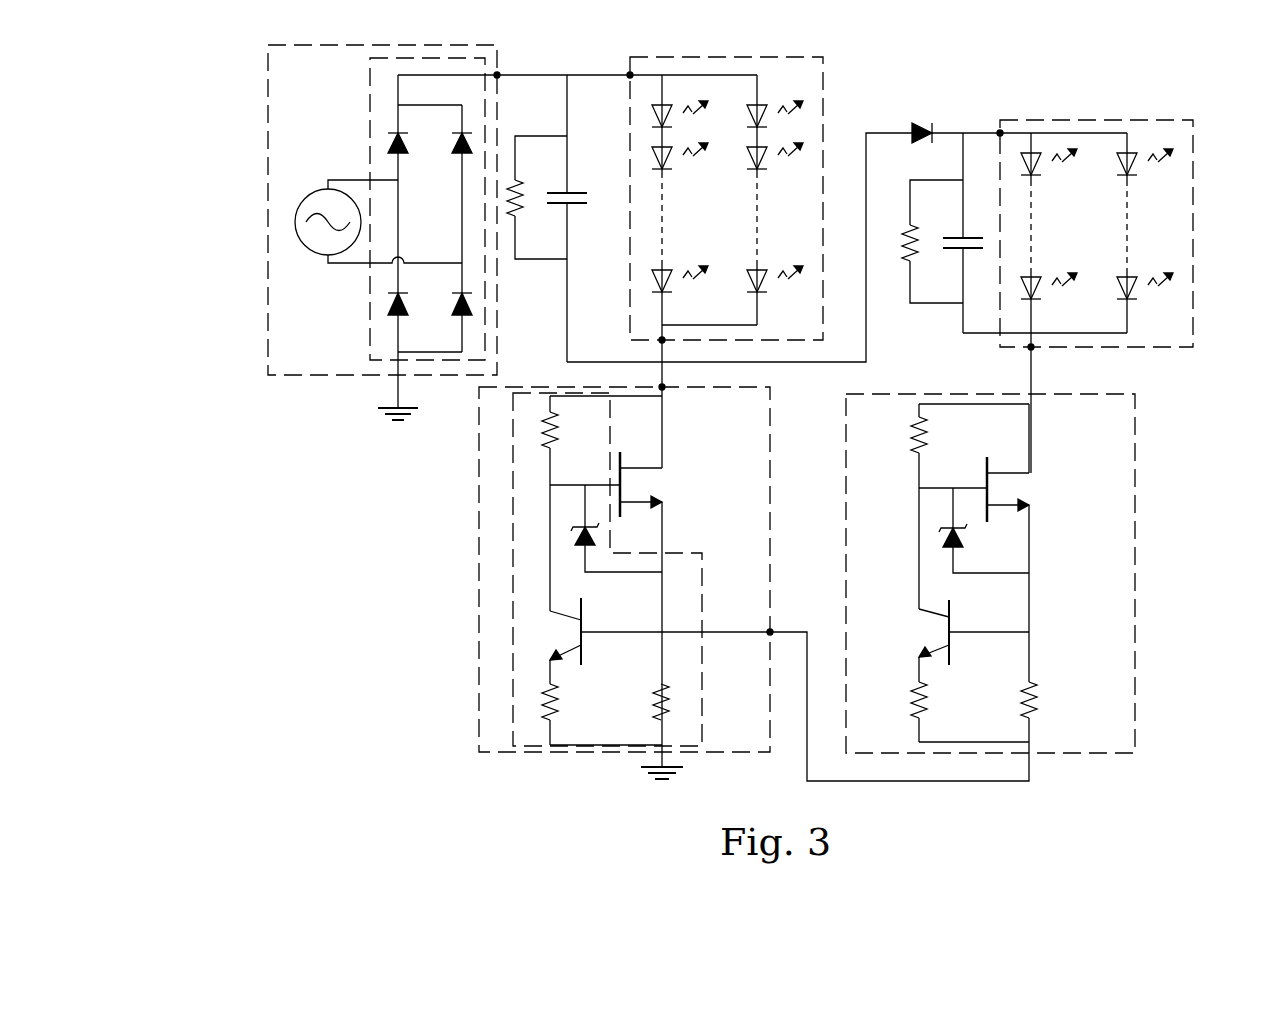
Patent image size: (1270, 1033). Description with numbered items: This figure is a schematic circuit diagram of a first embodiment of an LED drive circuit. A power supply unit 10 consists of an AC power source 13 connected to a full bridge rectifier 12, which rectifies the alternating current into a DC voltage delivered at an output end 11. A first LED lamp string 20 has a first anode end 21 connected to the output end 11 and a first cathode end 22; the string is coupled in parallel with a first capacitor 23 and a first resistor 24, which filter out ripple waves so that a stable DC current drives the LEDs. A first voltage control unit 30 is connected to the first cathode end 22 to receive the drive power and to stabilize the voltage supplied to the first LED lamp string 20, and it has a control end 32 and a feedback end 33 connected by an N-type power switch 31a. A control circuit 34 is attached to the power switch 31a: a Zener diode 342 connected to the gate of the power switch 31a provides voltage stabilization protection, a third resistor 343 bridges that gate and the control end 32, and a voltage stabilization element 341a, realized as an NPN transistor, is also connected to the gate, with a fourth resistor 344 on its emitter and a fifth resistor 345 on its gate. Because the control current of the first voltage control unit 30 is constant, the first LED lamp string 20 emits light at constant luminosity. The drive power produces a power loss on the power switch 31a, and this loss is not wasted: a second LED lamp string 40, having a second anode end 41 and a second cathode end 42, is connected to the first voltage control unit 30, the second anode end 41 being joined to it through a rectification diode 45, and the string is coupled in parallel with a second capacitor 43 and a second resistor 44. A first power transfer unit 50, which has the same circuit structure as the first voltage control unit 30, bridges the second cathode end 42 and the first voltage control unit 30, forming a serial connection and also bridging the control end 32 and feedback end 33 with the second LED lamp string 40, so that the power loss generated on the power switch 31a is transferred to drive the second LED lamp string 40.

The power supply unit 10 is at (262, 110).
The output end 11 is at (498, 74).
The full bridge rectifier 12 is at (431, 58).
The AC power source 13 is at (296, 216).
The first LED lamp string 20 is at (758, 55).
The first anode end 21 is at (628, 75).
The first cathode end 22 is at (664, 341).
The first capacitor 23 is at (573, 192).
The first resistor 24 is at (508, 218).
The first voltage control unit 30 is at (472, 508).
The power switch 31a is at (666, 483).
The control end 32 is at (660, 386).
The feedback end 33 is at (772, 630).
The control circuit 34 is at (511, 633).
The voltage stabilization element 341a is at (548, 638).
The Zener diode 342 is at (578, 548).
The third resistor 343 is at (540, 448).
The fourth resistor 344 is at (537, 723).
The fifth resistor 345 is at (650, 723).
The second LED lamp string 40 is at (1126, 116).
The second anode end 41 is at (999, 132).
The second cathode end 42 is at (1033, 348).
The second capacitor 43 is at (966, 237).
The second resistor 44 is at (905, 263).
The rectification diode 45 is at (921, 113).
The first power transfer unit 50 is at (1150, 542).